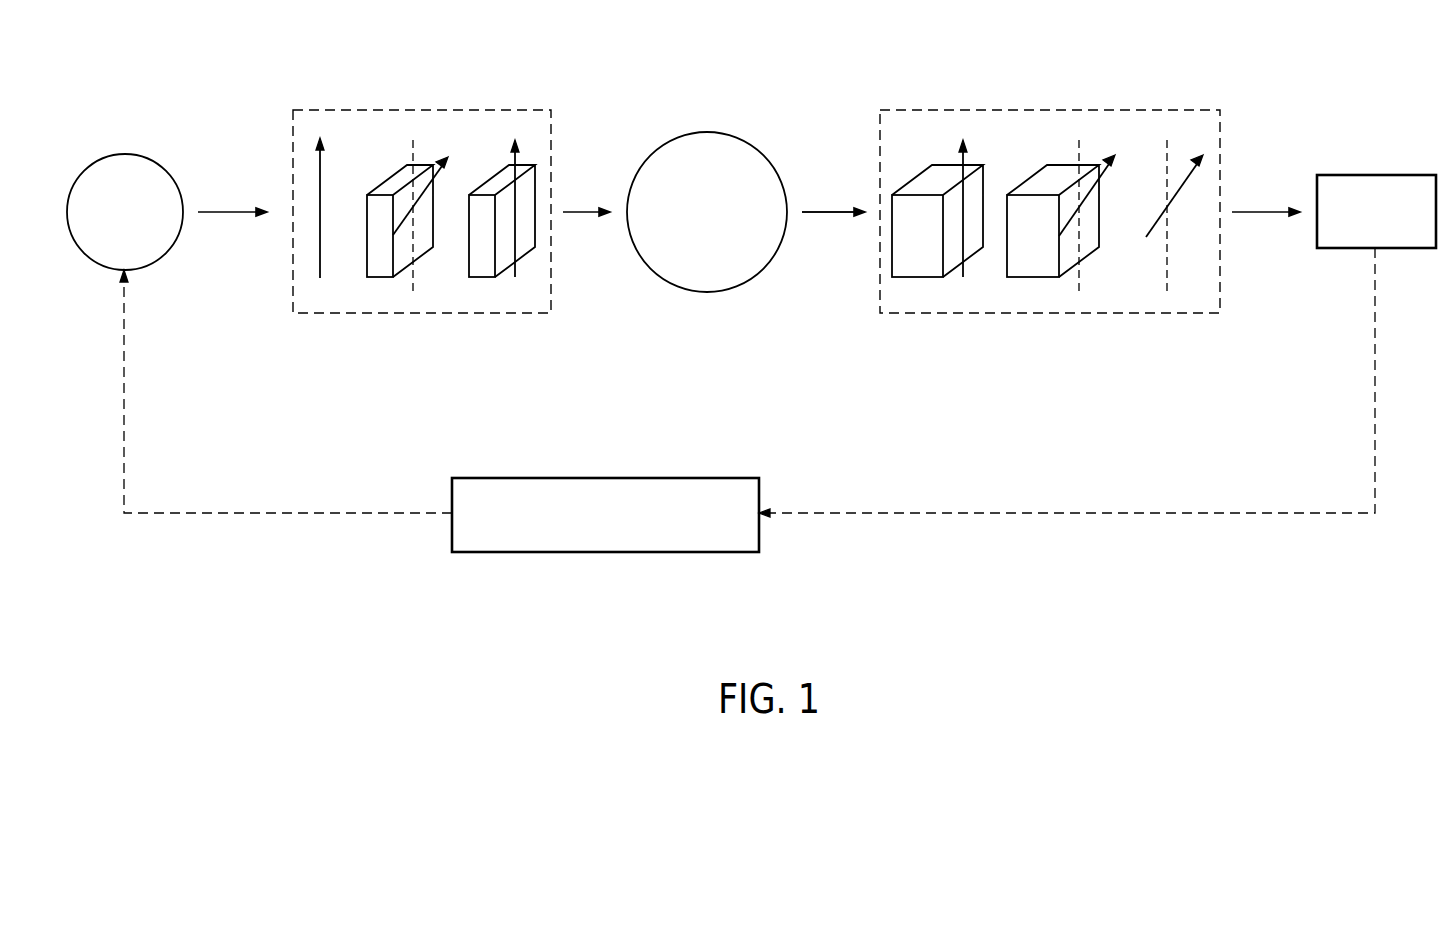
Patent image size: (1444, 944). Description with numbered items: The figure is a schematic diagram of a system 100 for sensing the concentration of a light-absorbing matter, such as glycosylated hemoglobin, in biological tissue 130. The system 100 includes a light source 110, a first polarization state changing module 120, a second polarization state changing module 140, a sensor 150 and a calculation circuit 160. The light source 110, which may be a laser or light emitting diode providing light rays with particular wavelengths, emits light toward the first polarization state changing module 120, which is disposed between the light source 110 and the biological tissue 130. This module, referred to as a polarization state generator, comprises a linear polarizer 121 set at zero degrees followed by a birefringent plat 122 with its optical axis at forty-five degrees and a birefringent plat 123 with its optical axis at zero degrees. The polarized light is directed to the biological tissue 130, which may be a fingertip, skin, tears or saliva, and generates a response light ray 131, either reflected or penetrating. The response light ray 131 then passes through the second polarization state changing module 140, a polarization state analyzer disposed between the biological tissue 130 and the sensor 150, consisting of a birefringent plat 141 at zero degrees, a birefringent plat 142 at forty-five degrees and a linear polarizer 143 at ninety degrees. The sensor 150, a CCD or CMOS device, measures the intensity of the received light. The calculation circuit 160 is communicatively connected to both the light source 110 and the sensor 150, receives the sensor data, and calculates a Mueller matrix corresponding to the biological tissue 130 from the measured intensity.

The system 100 is at (330, 36).
The light source 110 is at (125, 154).
The first polarization state changing module 120 is at (360, 313).
The linear polarizer 121 is at (318, 262).
The birefringent plat 122 is at (435, 250).
The birefringent plat 123 is at (503, 280).
The biological tissue 130 is at (705, 132).
The response light ray 131 is at (828, 212).
The second polarization state changing module 140 is at (973, 313).
The birefringent plat 141 is at (915, 277).
The birefringent plat 142 is at (1035, 277).
The linear polarizer 143 is at (1167, 272).
The sensor 150 is at (1375, 175).
The calculation circuit 160 is at (605, 552).